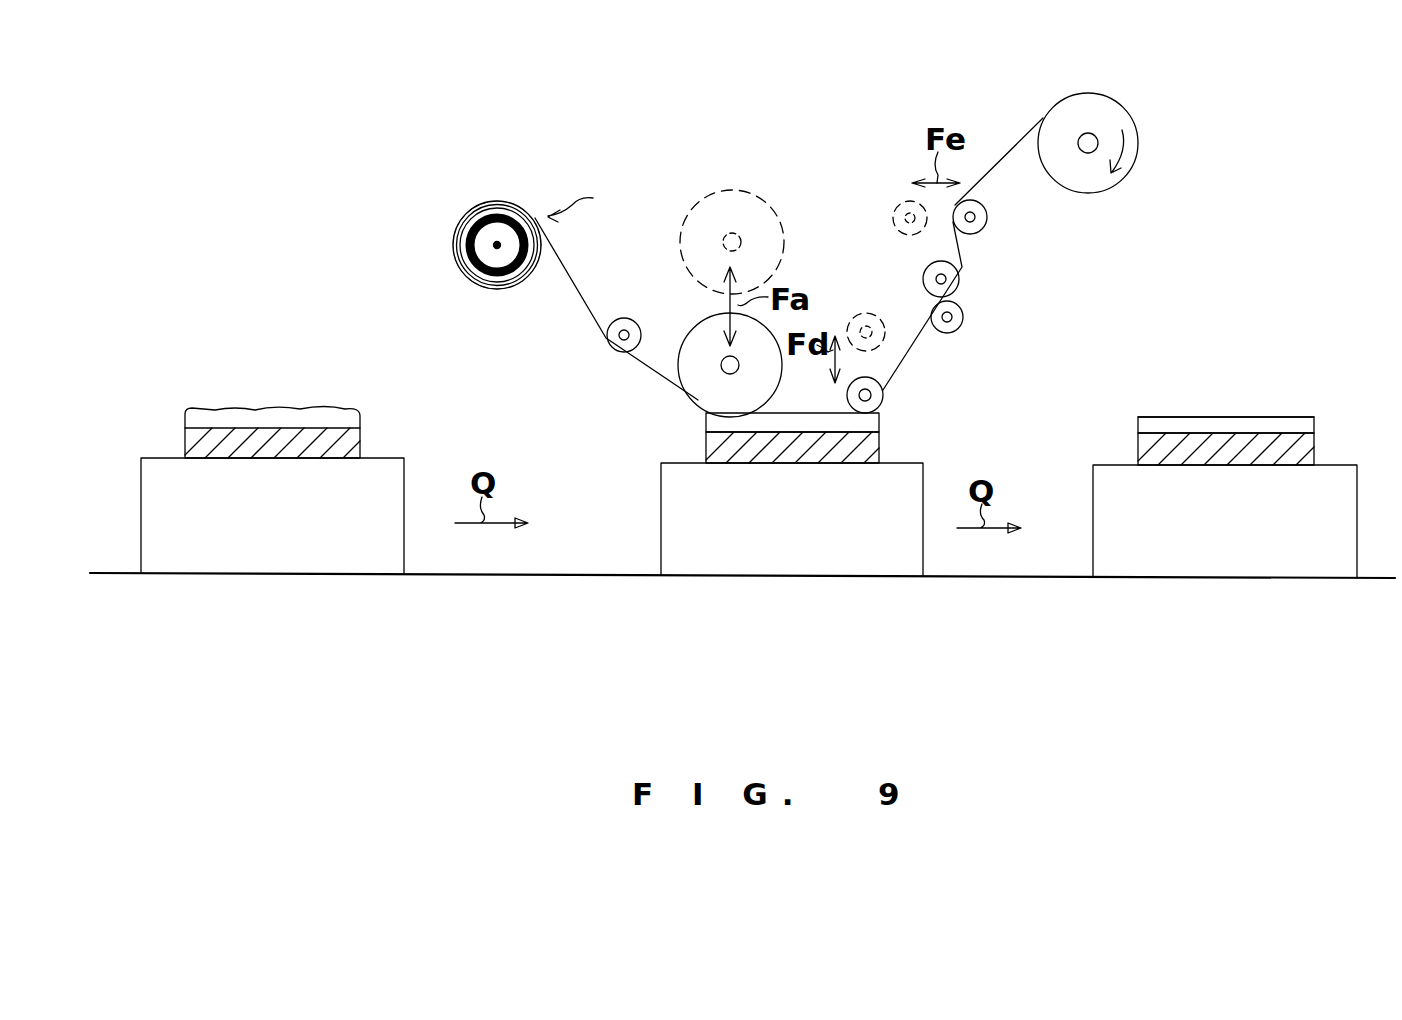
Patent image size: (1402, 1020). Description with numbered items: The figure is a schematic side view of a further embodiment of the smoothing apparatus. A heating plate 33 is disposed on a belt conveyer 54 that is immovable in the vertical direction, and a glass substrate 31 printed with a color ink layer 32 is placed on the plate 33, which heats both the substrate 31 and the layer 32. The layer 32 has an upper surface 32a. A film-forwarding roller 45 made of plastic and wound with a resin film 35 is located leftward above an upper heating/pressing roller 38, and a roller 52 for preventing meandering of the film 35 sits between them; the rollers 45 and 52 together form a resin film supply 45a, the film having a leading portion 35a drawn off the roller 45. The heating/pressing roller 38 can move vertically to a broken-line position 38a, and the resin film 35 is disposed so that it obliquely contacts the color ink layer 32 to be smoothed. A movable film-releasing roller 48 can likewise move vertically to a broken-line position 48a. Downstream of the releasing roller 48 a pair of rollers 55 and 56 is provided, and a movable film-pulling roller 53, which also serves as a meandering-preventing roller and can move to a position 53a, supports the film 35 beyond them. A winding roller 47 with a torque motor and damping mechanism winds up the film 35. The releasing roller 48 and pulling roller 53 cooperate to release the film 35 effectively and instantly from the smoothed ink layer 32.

The glass substrate 31 is at (353, 445).
The color ink layer 32 is at (310, 412).
The surface of layer 32a is at (1287, 417).
The heating plate 33 is at (262, 563).
The resin film 35 is at (660, 383).
The leading end of film 35a is at (528, 217).
The upper heating/pressing roller 38 is at (693, 337).
The position of upper heating/pressing roller 38a is at (765, 208).
The film-forwarding roller 45 is at (472, 212).
The resin film supply 45a is at (604, 200).
The winding roller 47 is at (1118, 98).
The film-releasing roller 48 is at (847, 395).
The position of film-releasing roller 48a is at (857, 317).
The meandering-preventing roller 52 is at (628, 318).
The film-pulling roller 53 is at (987, 218).
The position of film-pulling roller 53a is at (893, 213).
The belt conveyer 54 is at (556, 578).
The roller 55 is at (963, 317).
The roller 56 is at (962, 267).